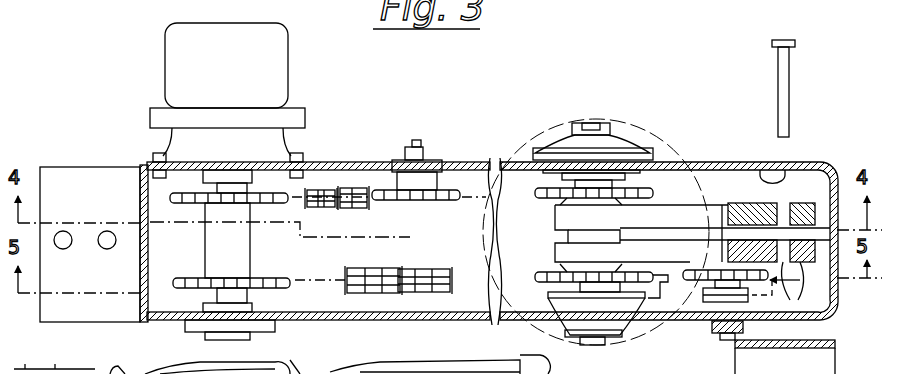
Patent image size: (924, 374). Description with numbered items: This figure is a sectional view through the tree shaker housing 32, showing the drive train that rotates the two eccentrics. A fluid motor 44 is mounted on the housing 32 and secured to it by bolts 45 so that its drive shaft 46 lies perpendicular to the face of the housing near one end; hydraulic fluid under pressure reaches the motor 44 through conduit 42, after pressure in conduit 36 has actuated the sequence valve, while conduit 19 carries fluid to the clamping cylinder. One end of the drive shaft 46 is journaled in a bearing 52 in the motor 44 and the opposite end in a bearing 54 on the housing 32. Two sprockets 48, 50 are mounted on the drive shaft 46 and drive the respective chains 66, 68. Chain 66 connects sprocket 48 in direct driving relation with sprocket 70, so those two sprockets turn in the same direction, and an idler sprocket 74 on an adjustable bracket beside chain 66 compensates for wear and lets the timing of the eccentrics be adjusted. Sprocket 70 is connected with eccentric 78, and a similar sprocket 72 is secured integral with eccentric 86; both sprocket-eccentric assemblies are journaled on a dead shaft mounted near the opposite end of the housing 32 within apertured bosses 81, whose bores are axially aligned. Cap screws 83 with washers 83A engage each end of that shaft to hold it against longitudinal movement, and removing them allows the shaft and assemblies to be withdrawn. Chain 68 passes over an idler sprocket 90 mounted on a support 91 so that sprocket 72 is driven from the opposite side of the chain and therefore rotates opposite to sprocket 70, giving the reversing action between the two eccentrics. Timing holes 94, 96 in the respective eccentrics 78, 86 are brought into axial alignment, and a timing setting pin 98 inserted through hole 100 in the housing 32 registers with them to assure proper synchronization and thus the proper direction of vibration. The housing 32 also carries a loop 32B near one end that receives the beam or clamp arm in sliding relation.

The conduit 19 is at (455, 368).
The tree shaker housing 32 is at (97, 163).
The loop 32B is at (745, 372).
The conduit 36 is at (540, 288).
The conduit 42 is at (783, 158).
The fluid motor 44 is at (290, 73).
The bolts 45 is at (150, 160).
The drive shaft 46 is at (205, 258).
The sprocket 48 is at (170, 193).
The sprocket 50 is at (290, 286).
The bearing 52 is at (228, 175).
The bearing 54 is at (203, 326).
The chain 66 is at (350, 190).
The chain 68 is at (395, 293).
The sprocket 70 is at (652, 205).
The sprocket 72 is at (668, 278).
The idler sprocket 74 is at (445, 191).
The eccentric 78 is at (722, 215).
The apertured bosses 81 is at (627, 140).
The cap screws 83 is at (598, 124).
The washers 83A is at (568, 128).
The eccentric 86 is at (806, 262).
The idler sprocket 90 is at (700, 282).
The support 91 is at (742, 303).
The timing hole 94 is at (790, 205).
The timing hole 96 is at (788, 262).
The timing setting pin 98 is at (798, 44).
The hole 100 is at (765, 170).